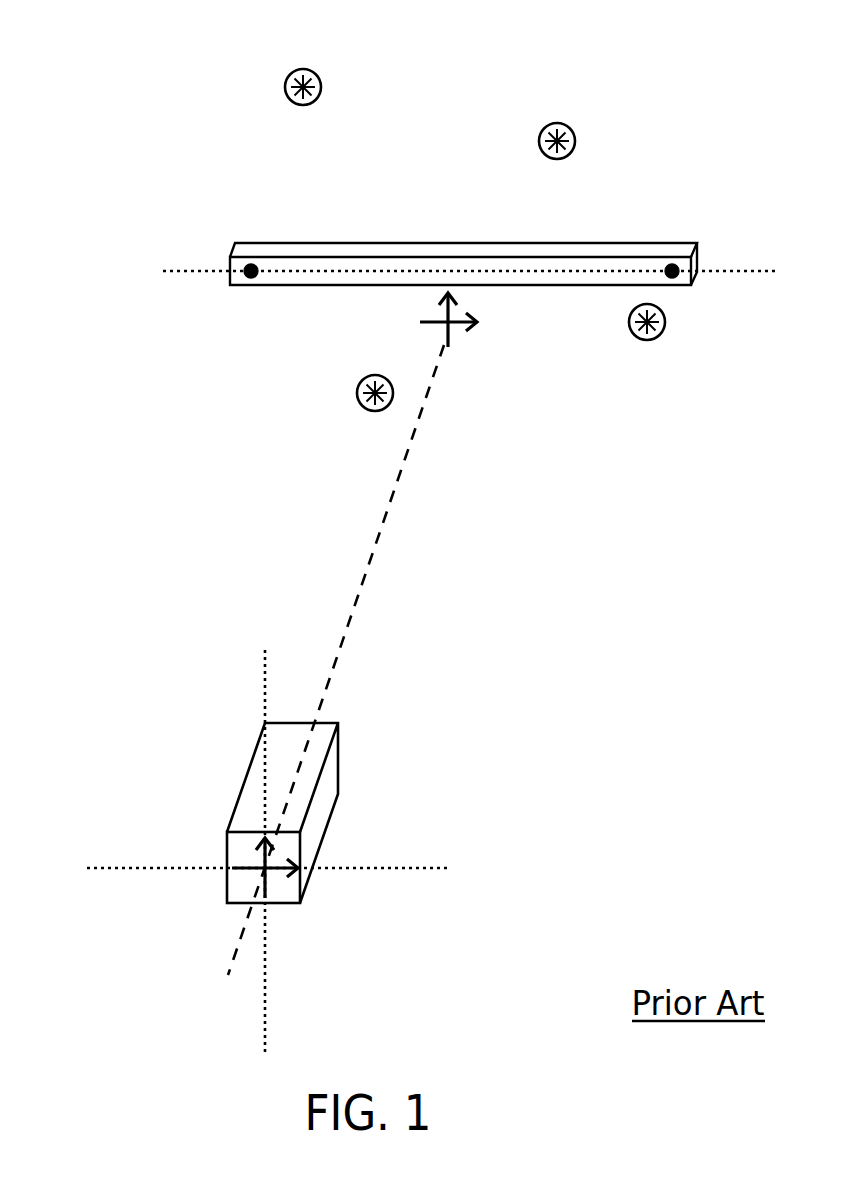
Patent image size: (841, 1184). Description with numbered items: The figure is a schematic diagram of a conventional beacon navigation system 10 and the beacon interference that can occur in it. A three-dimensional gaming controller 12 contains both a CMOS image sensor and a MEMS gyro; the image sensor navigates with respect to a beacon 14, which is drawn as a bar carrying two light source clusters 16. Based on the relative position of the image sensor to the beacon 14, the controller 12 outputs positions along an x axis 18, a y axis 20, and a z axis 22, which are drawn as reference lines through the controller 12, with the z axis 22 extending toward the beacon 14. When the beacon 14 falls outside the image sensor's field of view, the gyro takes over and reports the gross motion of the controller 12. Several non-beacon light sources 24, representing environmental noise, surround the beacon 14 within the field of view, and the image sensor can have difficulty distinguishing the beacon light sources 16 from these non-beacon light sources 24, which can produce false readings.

The navigation system 10 is at (152, 40).
The gaming controller 12 is at (338, 785).
The beacon 14 is at (327, 243).
The light source clusters 16 is at (250, 283).
The x axis 18 is at (113, 867).
The y axis 20 is at (264, 683).
The z axis 22 is at (375, 548).
The non-beacon light sources 24 is at (318, 73).